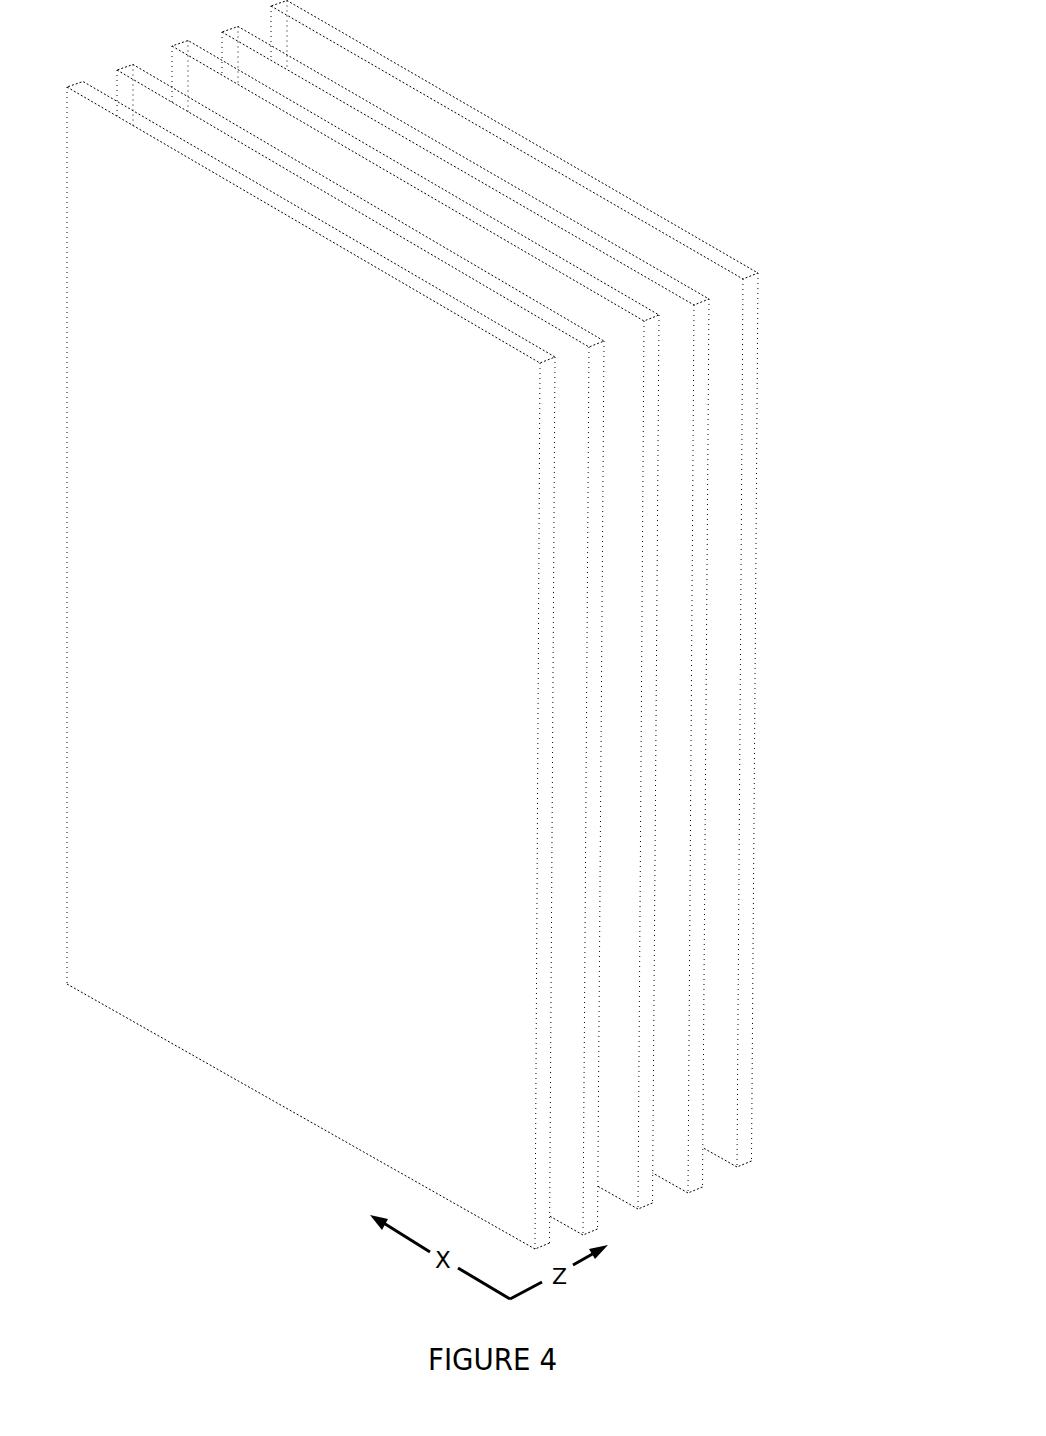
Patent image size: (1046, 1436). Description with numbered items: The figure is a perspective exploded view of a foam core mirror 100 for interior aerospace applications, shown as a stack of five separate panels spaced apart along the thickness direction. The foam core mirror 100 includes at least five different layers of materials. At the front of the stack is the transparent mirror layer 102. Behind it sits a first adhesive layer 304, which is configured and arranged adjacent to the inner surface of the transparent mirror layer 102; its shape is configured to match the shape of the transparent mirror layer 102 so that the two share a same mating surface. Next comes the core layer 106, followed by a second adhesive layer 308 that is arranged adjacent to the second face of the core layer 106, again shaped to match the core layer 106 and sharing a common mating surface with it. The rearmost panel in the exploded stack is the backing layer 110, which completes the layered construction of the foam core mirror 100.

The foam core mirror 100 is at (501, 625).
The transparent mirror layer 102 is at (473, 1107).
The first adhesive layer 304 is at (562, 1037).
The core layer 106 is at (614, 967).
The second adhesive layer 308 is at (662, 895).
The backing layer 110 is at (722, 825).